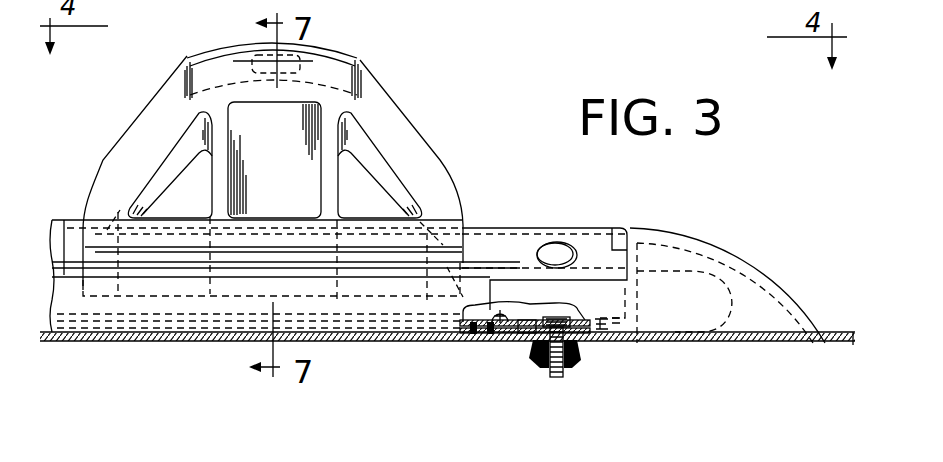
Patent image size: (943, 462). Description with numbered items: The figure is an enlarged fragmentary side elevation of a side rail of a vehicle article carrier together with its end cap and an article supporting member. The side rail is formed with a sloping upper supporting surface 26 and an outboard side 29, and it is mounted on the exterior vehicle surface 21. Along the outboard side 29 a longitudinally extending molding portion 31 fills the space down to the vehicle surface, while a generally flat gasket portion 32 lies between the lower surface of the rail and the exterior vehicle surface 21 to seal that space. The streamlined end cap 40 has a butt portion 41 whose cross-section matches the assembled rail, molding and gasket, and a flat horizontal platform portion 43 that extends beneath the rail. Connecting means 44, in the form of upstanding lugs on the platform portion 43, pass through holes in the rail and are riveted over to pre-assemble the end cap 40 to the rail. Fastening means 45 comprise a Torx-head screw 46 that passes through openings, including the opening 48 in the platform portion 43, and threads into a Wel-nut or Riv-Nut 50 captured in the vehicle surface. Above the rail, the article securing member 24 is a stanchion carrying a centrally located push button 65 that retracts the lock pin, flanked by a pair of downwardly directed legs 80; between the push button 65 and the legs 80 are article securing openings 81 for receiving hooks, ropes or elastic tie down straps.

The exterior vehicle surface 21 is at (113, 337).
The article securing member 24 is at (387, 85).
The upper supporting surface 26 is at (521, 242).
The outboard side 29 is at (64, 275).
The molding portion 31 is at (84, 303).
The gasket portion 32 is at (473, 343).
The end cap 40 is at (778, 270).
The butt portion 41 is at (620, 230).
The platform portion 43 is at (505, 337).
The connecting means 44 is at (493, 337).
The fastening means 45 is at (587, 382).
The Torx-head screw 46 is at (557, 379).
The opening 48 is at (527, 340).
The Wel-nut or Riv-Nut 50 is at (590, 364).
The push button 65 is at (285, 187).
The leg 80 is at (123, 147).
The article securing opening 81 is at (188, 205).